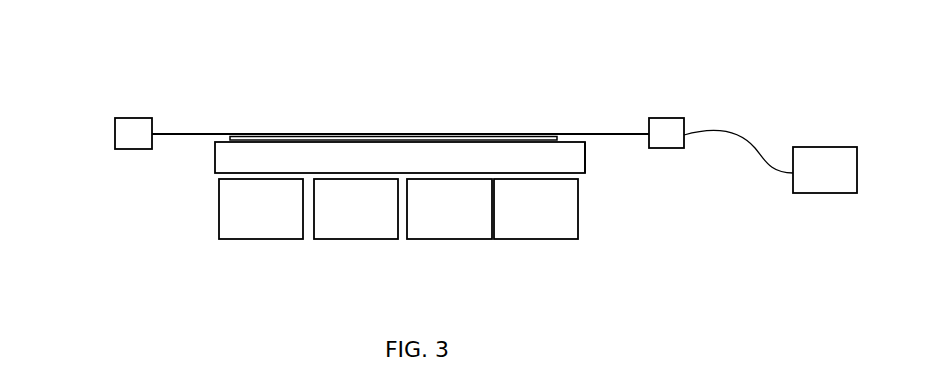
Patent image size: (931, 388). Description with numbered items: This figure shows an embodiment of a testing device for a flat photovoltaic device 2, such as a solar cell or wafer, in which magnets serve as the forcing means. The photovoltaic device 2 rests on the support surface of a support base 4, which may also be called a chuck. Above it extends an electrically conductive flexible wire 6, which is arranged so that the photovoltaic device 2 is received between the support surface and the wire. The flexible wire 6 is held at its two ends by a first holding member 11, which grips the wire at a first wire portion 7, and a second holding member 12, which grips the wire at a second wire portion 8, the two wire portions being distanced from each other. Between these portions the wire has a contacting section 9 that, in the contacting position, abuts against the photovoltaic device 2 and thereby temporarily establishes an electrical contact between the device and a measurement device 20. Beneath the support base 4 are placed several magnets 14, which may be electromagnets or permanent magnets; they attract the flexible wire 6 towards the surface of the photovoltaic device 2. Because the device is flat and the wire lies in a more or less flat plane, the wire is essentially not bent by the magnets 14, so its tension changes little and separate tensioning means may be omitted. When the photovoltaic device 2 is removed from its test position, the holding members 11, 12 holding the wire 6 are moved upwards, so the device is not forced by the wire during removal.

The photovoltaic device 2 is at (587, 141).
The support base 4 is at (215, 157).
The flexible wire 6 is at (573, 133).
The first wire portion 7 is at (158, 126).
The second wire portion 8 is at (642, 127).
The contacting section 9 is at (402, 129).
The first holding member 11 is at (115, 133).
The second holding member 12 is at (686, 123).
The magnet 14 is at (579, 213).
The measurement device 20 is at (812, 182).